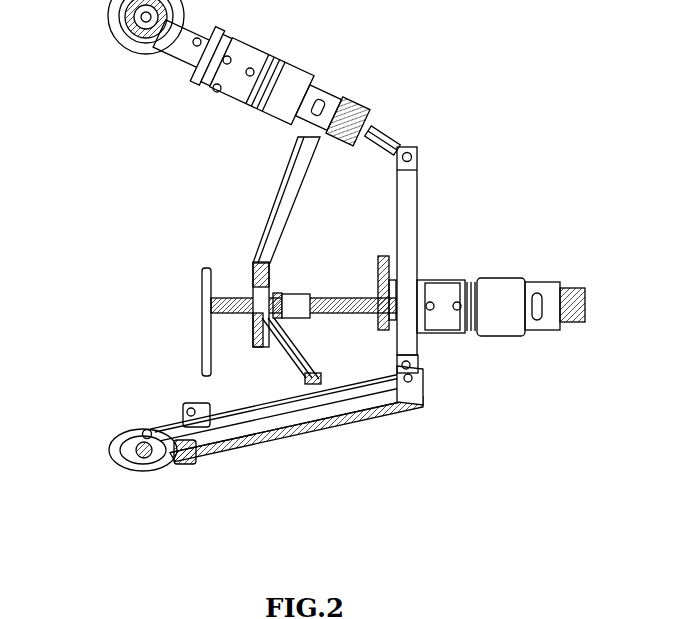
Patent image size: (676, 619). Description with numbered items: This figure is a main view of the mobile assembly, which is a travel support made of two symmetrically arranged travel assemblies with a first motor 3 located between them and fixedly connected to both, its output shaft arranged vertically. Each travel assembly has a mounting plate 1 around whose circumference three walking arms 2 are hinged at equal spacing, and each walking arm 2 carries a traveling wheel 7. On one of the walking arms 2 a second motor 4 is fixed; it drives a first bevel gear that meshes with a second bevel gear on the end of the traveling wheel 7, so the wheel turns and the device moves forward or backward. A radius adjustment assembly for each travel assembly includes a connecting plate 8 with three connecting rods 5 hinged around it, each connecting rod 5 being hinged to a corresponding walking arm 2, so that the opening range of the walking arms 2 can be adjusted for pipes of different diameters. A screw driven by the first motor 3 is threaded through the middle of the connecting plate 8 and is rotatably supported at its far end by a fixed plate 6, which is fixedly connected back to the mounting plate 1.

The mounting plate 1 is at (464, 194).
The walking arm 2 is at (304, 437).
The first motor 3 is at (501, 393).
The second motor 4 is at (254, 77).
The connecting rod 5 is at (176, 215).
The fixed plate 6 is at (215, 315).
The traveling wheel 7 is at (121, 456).
The connecting plate 8 is at (306, 414).